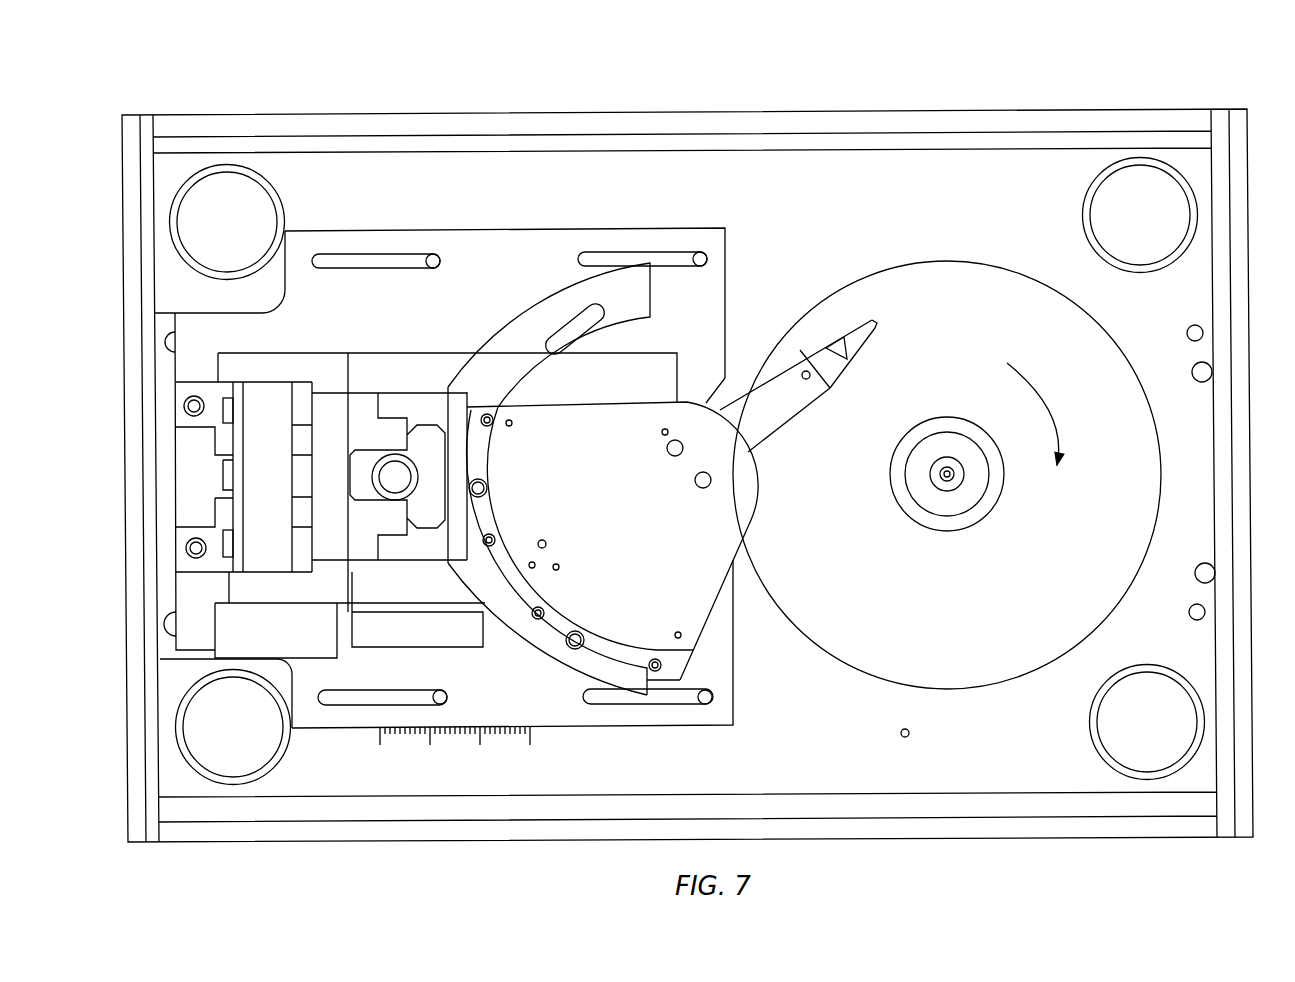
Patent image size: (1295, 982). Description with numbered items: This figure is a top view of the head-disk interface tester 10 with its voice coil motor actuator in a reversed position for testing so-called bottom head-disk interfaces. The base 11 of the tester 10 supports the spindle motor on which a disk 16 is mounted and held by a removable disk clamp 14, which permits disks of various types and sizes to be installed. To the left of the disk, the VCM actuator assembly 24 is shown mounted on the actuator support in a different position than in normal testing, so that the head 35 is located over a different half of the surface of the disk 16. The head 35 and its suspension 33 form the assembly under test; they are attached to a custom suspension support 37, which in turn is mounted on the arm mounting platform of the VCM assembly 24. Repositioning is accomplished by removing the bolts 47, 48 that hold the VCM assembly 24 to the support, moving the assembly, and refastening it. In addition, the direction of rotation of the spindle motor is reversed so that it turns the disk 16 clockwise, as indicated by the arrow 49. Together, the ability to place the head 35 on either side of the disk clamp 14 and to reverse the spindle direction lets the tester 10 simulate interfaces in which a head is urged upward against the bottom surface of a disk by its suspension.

The head-disk interface tester 10 is at (706, 463).
The base 11 is at (915, 138).
The disk clamp 14 is at (937, 498).
The disk 16 is at (1135, 435).
The VCM actuator assembly 24 is at (633, 310).
The suspension 33 is at (862, 337).
The head 35 is at (876, 323).
The suspension support 37 is at (838, 377).
The bolt 47 is at (572, 630).
The bolt 48 is at (488, 480).
The arrow 49 is at (1035, 373).